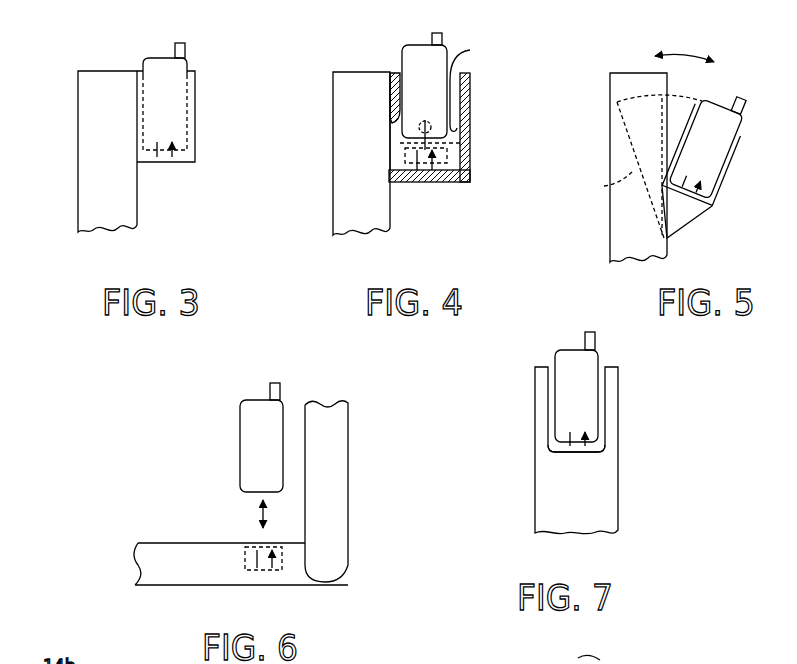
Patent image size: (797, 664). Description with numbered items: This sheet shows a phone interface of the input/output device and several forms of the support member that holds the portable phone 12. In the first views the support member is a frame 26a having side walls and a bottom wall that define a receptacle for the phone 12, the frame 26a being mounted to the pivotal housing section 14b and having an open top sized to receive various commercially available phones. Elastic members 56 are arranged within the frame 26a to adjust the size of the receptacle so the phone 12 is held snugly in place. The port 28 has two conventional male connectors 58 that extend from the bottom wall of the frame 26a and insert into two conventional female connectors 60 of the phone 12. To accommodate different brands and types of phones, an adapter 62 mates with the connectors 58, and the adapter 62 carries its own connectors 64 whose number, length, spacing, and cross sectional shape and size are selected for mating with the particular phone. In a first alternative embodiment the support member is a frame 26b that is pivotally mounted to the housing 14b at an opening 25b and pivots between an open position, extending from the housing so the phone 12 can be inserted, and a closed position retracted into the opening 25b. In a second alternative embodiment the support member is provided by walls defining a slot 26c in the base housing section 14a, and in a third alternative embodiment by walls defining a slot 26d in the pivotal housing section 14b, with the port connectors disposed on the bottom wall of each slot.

In FIG. 3, the portable phone 12 is at (186, 58).
In FIG. 4, the portable phone 12 is at (402, 53).
In FIG. 5, the portable phone 12 is at (746, 109).
In FIG. 6, the portable phone 12 is at (240, 405).
In FIG. 7, the portable phone 12 is at (599, 353).
In FIG. 6, the base housing section 14a is at (180, 542).
In FIG. 3, the pivotal housing section 14b is at (77, 148).
In FIG. 4, the pivotal housing section 14b is at (332, 152).
In FIG. 5, the pivotal housing section 14b is at (609, 153).
In FIG. 6, the pivotal housing section 14b is at (350, 443).
In FIG. 7, the pivotal housing section 14b is at (619, 459).
In FIG. 5, the opening 25b is at (604, 186).
In FIG. 3, the frame 26a is at (197, 84).
In FIG. 4, the frame 26a is at (471, 86).
In FIG. 5, the frame 26b is at (720, 188).
In FIG. 6, the slot 26c is at (262, 550).
In FIG. 7, the slot 26d is at (549, 362).
In FIG. 3, the port 28 is at (204, 151).
In FIG. 4, the port 28 is at (472, 153).
In FIG. 4, the elastic members 56 is at (455, 83).
In FIG. 4, the male connectors 58 is at (420, 172).
In FIG. 4, the female connectors 60 is at (432, 127).
In FIG. 4, the adapter 62 is at (442, 172).
In FIG. 4, the connectors 64 is at (461, 143).